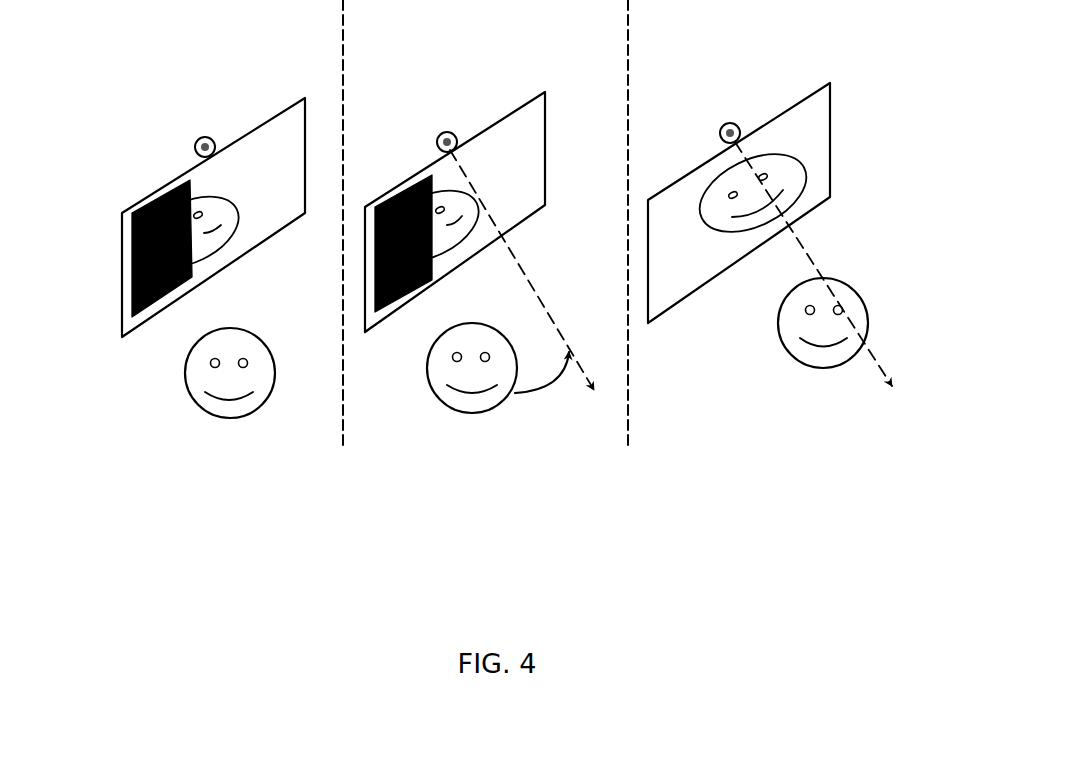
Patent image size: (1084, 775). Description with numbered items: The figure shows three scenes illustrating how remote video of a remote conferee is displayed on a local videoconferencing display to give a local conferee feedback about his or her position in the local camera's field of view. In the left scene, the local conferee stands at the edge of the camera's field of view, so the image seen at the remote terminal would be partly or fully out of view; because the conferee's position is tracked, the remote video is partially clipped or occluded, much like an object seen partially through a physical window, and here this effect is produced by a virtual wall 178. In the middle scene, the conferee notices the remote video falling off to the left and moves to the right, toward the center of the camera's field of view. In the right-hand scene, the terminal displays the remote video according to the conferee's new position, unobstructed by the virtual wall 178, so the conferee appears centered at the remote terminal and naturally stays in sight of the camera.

The virtual wall 178 is at (132, 242).